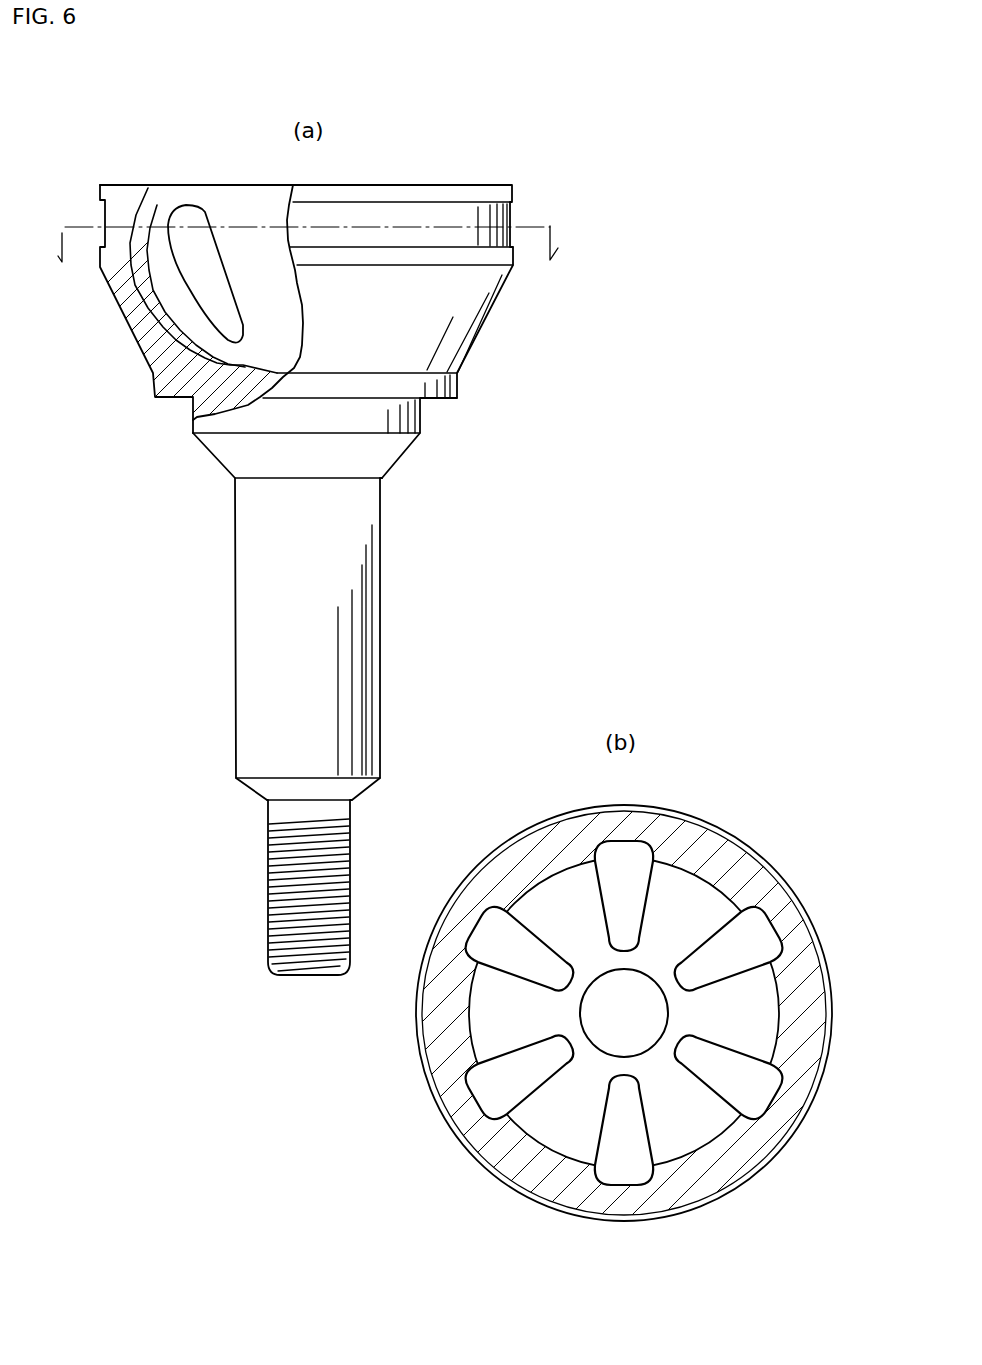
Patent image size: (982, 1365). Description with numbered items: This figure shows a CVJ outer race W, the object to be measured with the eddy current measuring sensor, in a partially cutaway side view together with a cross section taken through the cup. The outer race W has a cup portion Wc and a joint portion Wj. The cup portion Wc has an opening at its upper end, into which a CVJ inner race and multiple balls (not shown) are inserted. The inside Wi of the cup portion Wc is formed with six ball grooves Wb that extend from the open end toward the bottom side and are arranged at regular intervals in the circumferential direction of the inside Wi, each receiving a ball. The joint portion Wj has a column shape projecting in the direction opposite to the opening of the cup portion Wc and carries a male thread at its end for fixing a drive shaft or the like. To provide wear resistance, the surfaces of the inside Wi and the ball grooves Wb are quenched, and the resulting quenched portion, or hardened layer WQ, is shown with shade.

The ball grooves Wb is at (293, 223).
The inside of the cup portion Wi is at (153, 268).
The quenched portion (hardened layer) WQ is at (227, 348).
The cup portion Wc is at (499, 357).
The CVJ outer race W is at (559, 517).
The joint portion Wj is at (409, 642).